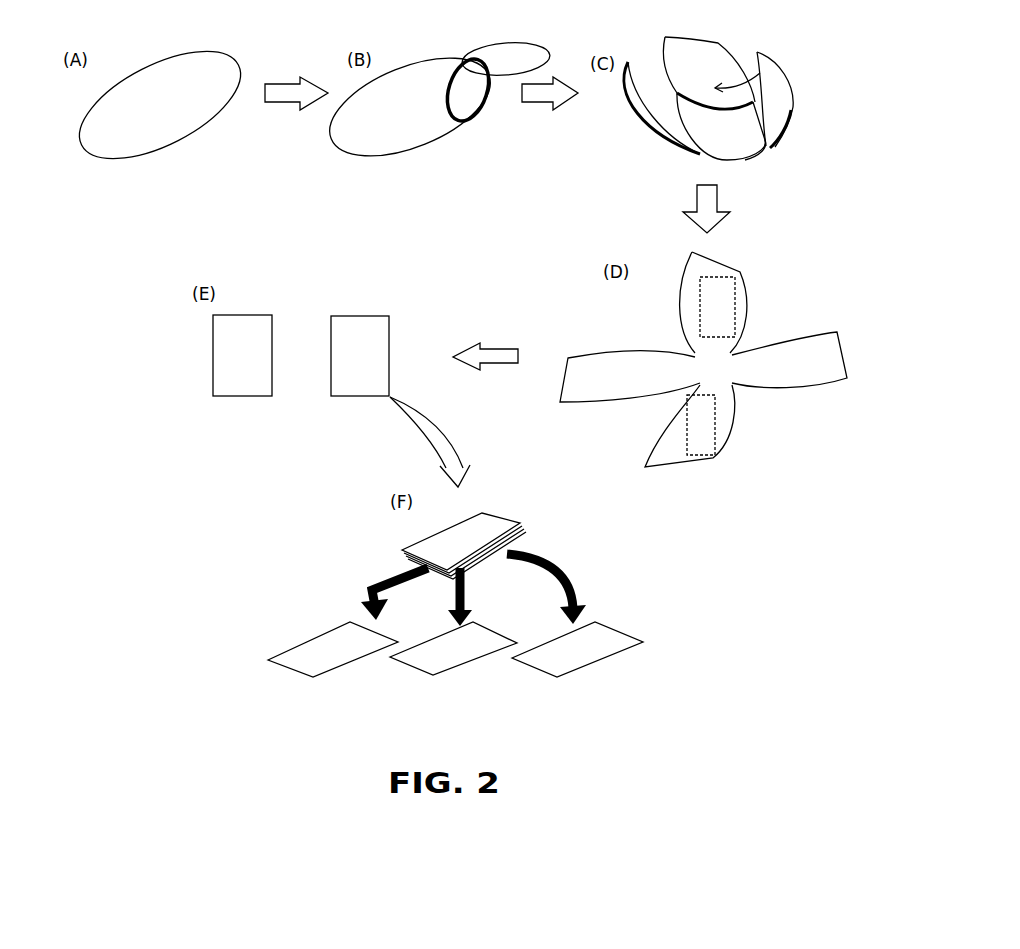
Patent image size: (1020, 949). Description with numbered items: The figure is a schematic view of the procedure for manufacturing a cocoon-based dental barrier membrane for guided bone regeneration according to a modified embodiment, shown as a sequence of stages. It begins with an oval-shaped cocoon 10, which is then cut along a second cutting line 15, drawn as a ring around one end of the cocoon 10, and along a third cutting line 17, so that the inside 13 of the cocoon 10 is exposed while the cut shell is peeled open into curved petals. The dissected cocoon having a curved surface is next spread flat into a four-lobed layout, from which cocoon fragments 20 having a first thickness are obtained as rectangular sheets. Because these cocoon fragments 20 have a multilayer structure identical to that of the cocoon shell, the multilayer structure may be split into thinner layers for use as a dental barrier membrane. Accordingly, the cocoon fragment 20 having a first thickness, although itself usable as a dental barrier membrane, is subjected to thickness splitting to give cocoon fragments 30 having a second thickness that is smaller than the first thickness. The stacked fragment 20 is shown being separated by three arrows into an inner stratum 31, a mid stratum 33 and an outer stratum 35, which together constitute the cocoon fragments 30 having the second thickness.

The cocoon 10 is at (112, 160).
The inside surface 13 is at (767, 57).
The second cutting line 15 is at (478, 124).
The third cutting line 17 is at (788, 132).
The cocoon fragment having a first thickness 20 is at (368, 403).
The cocoon fragment having a second thickness 30 is at (660, 625).
The inner stratum 31 is at (360, 643).
The mid stratum 33 is at (477, 650).
The outer stratum 35 is at (600, 650).